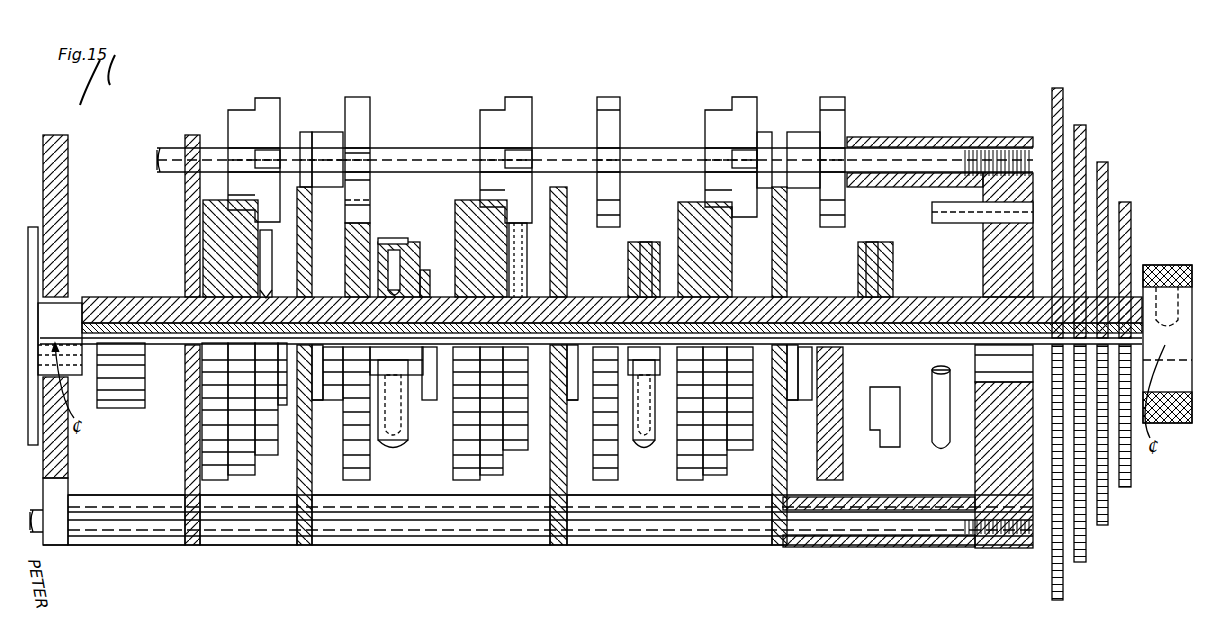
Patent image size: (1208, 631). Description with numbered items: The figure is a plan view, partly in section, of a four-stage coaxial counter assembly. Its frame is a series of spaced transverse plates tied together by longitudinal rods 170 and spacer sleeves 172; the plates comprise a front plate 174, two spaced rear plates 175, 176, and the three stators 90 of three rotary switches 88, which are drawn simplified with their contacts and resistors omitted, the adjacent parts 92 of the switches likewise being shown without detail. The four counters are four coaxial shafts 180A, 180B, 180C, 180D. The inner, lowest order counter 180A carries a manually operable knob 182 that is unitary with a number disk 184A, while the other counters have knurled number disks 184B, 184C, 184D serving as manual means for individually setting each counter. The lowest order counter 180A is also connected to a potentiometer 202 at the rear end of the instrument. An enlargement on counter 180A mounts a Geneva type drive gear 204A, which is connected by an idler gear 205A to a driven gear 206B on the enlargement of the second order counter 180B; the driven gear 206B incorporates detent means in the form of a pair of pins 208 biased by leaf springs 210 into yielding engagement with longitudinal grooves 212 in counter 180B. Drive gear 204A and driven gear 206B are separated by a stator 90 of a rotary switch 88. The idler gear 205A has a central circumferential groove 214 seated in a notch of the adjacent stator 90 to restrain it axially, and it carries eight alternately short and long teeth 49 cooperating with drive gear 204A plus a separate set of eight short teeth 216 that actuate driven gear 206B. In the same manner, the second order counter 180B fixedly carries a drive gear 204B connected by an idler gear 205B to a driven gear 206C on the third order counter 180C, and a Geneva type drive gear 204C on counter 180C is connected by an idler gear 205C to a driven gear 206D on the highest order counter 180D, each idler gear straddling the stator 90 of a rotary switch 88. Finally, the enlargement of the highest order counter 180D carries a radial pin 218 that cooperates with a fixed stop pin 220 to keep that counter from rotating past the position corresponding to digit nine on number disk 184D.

The alternately short and long teeth 49 is at (238, 112).
The longitudinal rods 170 is at (660, 158).
The spacer sleeves 172 is at (160, 545).
The front plate 174 is at (980, 475).
The rear plate 175 is at (185, 465).
The rear plate 176 is at (68, 455).
The lowest order counter 180A is at (591, 320).
The second order counter 180B is at (420, 311).
The third order counter 180C is at (670, 311).
The highest order counter 180D is at (970, 297).
The manually operable knob 182 is at (1155, 265).
The number disk 184A is at (1132, 210).
The number disk 184B is at (1110, 178).
The number disk 184C is at (1088, 132).
The number disk 184D is at (1065, 100).
The rotary switch 88 is at (316, 478).
The stator 90 is at (300, 425).
The spacer 92 is at (305, 388).
The potentiometer 202 is at (50, 230).
The Geneva type drive gear 204A is at (235, 252).
The drive gear 204B is at (468, 202).
The Geneva type drive gear 204C is at (695, 235).
The idler gear 205A is at (327, 130).
The idler gear 205B is at (600, 105).
The idler gear 205C is at (822, 105).
The driven gear 206B is at (370, 472).
The driven gear 206C is at (618, 455).
The driven gear 206D is at (843, 475).
The pins 208 is at (395, 262).
The leaf springs 210 is at (392, 244).
The longitudinal grooves 212 is at (425, 272).
The central circumferential groove 214 is at (305, 132).
The short teeth 216 is at (362, 99).
The radial pin 218 is at (935, 440).
The fixed stop pin 220 is at (962, 226).